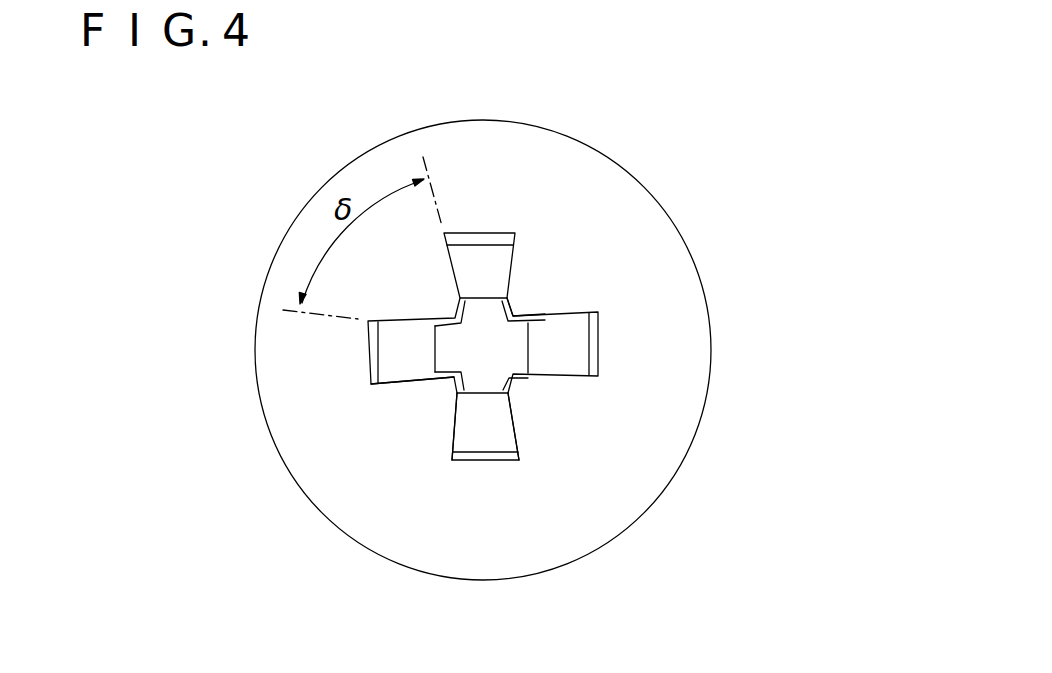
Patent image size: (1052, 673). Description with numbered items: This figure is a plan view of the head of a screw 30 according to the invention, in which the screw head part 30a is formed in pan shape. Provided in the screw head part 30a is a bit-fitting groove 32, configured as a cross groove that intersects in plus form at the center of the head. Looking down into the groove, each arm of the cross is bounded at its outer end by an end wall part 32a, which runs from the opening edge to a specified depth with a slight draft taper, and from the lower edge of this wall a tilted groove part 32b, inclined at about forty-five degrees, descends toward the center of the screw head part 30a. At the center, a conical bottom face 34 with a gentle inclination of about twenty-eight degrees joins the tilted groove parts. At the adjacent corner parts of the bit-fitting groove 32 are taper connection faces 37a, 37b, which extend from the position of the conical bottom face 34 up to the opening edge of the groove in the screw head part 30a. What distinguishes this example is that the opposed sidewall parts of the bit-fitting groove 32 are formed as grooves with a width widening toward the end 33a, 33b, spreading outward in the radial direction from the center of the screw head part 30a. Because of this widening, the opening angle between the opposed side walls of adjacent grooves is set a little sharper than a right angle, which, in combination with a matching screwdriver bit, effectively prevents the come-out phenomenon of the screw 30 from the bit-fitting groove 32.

The screw 30 is at (637, 172).
The screw head part 30a is at (667, 363).
The bit-fitting groove 32 is at (490, 231).
The end wall part 32a is at (373, 355).
The tilted groove part 32b is at (412, 367).
The groove with a width widening toward the end 33a is at (455, 410).
The groove with a width widening toward the end 33b is at (514, 402).
The conical bottom face 34 is at (497, 355).
The taper connection face 37a is at (516, 305).
The taper connection face 37b is at (525, 313).